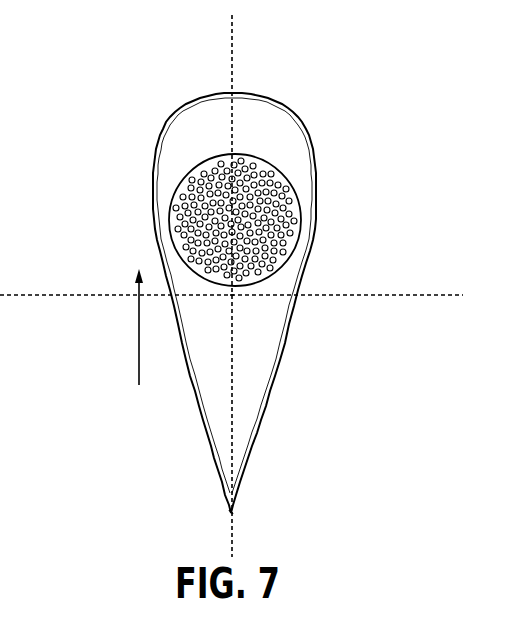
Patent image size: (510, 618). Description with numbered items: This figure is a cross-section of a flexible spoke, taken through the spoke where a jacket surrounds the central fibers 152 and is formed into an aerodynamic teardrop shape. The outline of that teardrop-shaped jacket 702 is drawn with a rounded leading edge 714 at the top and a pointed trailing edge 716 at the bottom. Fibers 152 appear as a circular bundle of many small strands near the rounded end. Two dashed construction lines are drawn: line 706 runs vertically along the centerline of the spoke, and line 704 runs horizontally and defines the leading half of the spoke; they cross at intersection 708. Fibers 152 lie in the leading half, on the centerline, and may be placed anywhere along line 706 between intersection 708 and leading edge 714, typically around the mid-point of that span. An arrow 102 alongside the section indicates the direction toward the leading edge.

The teardrop-shaped body 702 is at (296, 111).
The fibers 152 is at (300, 207).
The line 706 is at (232, 52).
The line 704 is at (403, 297).
The intersection 708 is at (232, 298).
The leading edge 714 is at (232, 92).
The trailing edge 716 is at (232, 513).
The flow direction arrow 102 is at (139, 352).